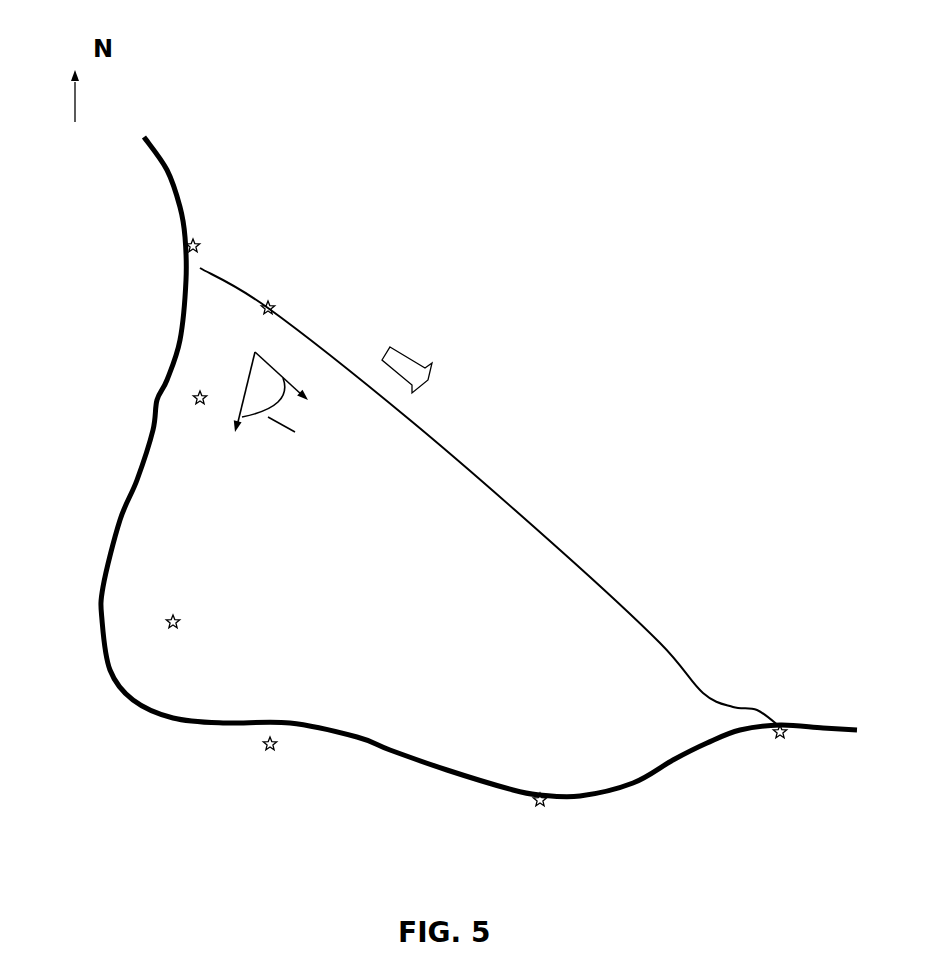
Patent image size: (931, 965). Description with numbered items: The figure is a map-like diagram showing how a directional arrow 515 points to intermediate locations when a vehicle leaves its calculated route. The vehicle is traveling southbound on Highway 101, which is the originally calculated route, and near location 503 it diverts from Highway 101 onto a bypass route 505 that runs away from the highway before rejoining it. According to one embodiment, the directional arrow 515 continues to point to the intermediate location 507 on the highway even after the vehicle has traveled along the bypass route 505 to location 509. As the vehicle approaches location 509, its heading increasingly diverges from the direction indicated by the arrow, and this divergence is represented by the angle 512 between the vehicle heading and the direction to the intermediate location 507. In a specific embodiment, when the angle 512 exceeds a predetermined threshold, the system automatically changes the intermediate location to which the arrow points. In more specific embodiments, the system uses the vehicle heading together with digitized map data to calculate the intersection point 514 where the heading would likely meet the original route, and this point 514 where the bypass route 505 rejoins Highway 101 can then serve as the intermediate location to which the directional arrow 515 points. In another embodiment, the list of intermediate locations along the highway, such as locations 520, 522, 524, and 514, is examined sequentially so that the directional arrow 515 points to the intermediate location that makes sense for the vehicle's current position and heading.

The Highway 101 is at (172, 533).
The location 503 is at (185, 238).
The bypass route 505 is at (458, 468).
The intermediate location 507 is at (195, 390).
The location 509 is at (271, 300).
The angle 512 is at (293, 407).
The intersection point 514 is at (783, 749).
The directional arrow 515 is at (407, 352).
The intermediate location 520 is at (169, 610).
The intermediate location 522 is at (266, 753).
The intermediate location 524 is at (547, 789).